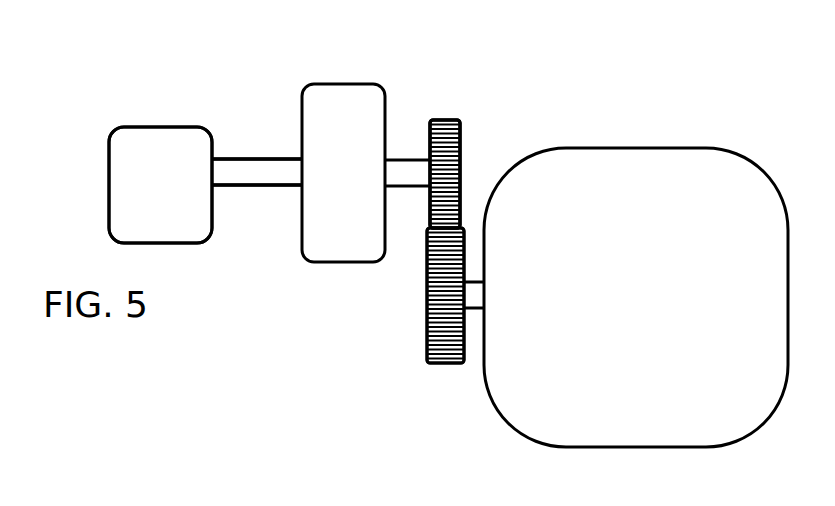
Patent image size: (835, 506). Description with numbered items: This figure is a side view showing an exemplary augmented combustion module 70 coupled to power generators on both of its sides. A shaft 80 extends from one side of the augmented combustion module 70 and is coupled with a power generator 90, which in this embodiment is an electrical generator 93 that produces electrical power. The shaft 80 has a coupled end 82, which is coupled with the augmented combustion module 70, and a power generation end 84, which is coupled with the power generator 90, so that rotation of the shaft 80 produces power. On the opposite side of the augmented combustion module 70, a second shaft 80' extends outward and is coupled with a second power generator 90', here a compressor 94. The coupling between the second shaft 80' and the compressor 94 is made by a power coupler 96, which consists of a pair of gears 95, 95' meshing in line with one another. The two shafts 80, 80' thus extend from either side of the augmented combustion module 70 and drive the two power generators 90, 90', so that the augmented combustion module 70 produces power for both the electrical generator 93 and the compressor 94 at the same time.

The electrical generator 93 is at (127, 150).
The power generator 90 is at (160, 135).
The power generation end 84 is at (212, 157).
The shaft 80 is at (257, 115).
The coupled end 82 is at (295, 188).
The augmented combustion module 70 is at (328, 134).
The shaft 80' is at (419, 117).
The power coupler 96 is at (462, 125).
The gear 95 is at (410, 211).
The power generator 90' is at (492, 241).
The gear 95' is at (410, 295).
The compressor 94 is at (595, 172).